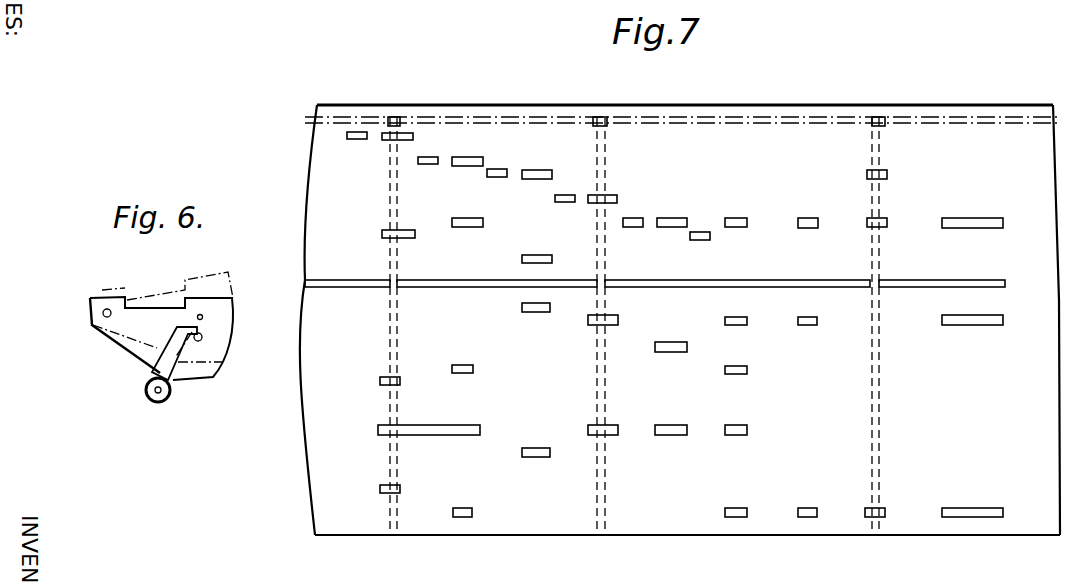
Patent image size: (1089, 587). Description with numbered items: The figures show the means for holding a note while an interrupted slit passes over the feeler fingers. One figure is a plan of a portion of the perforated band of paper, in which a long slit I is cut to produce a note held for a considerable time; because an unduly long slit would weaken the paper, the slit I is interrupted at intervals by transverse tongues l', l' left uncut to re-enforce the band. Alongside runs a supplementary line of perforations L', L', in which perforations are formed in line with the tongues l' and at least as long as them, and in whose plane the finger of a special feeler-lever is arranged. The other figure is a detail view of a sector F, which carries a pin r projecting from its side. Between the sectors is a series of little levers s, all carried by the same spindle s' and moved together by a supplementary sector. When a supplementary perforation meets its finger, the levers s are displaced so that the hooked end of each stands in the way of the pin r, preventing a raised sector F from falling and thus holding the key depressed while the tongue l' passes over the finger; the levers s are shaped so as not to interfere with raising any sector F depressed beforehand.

In FIG. 7, the supplementary line of perforations L' is at (681, 121).
In FIG. 7, the transverse tongue l' is at (643, 326).
In FIG. 7, the pins l is at (641, 119).
In FIG. 7, the long slit I is at (655, 271).
In FIG. 6, the sector F is at (161, 326).
In FIG. 6, the pin r is at (204, 343).
In FIG. 6, the little lever s is at (174, 353).
In FIG. 6, the spindle s' is at (155, 399).